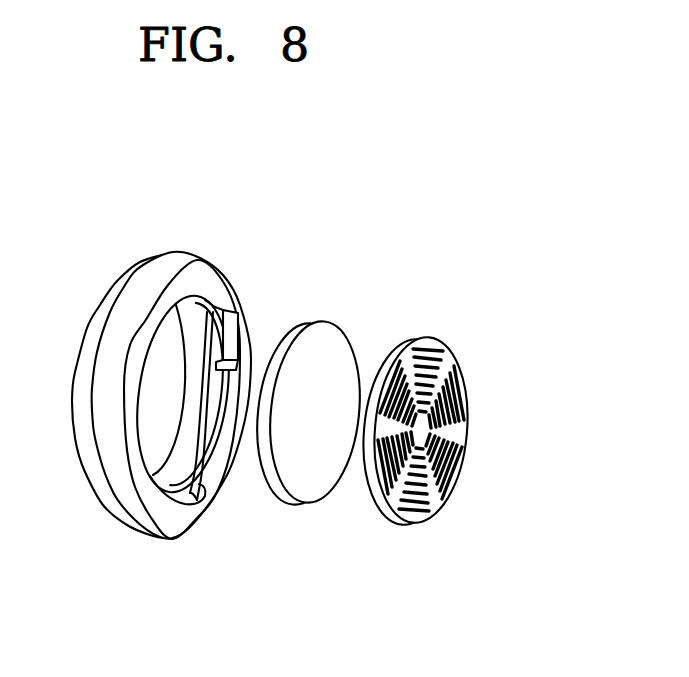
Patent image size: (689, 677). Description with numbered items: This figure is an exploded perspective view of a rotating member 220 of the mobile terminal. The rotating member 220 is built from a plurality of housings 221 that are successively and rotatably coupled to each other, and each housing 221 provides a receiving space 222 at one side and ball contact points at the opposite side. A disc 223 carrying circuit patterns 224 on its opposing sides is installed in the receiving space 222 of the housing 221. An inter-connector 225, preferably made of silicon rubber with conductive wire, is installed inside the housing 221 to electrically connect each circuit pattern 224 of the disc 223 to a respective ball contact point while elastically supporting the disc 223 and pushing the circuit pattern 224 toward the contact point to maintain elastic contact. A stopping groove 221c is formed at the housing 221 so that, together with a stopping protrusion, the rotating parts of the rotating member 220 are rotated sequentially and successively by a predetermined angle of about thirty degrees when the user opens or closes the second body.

The rotating member 220 is at (133, 278).
The housing 221 is at (126, 520).
The stopping groove 221c is at (236, 313).
The receiving space 222 is at (205, 500).
The disc 223 is at (383, 512).
The circuit pattern 224 is at (455, 391).
The inter-connector 225 is at (303, 482).